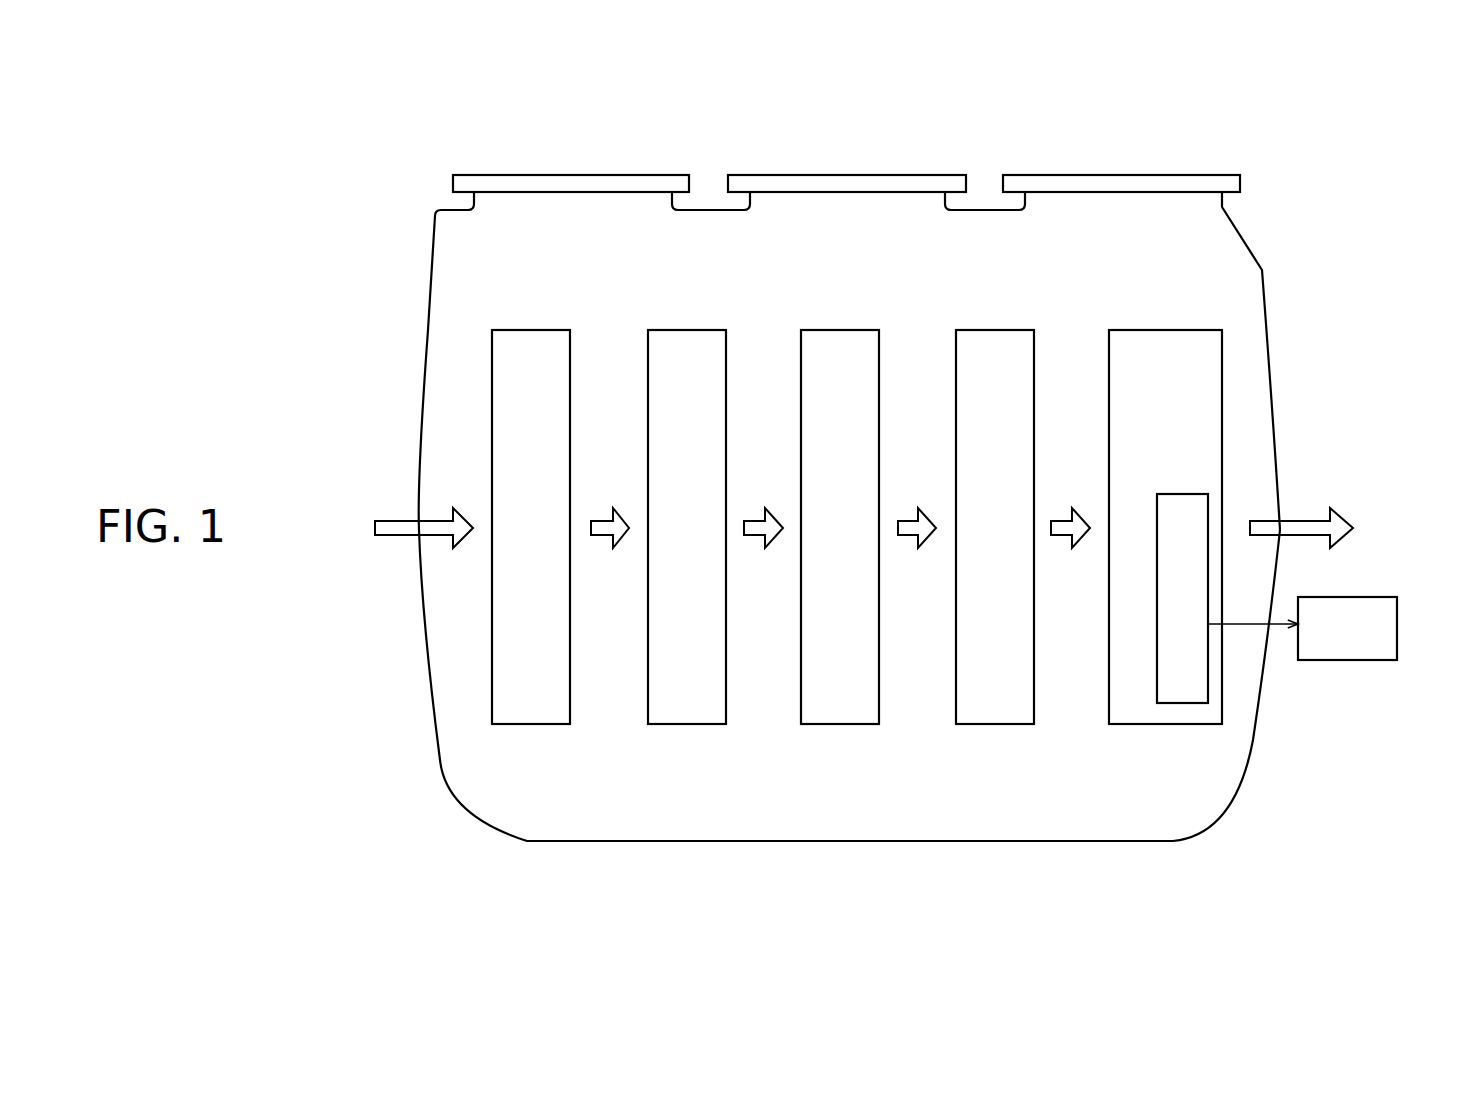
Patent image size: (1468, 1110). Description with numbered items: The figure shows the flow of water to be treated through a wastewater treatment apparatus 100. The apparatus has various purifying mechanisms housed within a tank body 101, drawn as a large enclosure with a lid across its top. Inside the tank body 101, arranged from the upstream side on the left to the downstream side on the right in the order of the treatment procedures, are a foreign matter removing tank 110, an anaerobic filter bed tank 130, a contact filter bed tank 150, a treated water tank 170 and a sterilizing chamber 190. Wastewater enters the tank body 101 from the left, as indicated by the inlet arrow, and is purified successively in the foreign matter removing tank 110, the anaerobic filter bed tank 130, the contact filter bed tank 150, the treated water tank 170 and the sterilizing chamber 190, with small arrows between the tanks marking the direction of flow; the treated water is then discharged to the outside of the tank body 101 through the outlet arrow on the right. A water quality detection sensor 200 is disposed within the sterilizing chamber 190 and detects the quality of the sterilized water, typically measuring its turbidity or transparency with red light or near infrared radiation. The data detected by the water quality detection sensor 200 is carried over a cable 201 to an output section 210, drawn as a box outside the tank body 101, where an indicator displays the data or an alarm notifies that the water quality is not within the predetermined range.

The wastewater treatment apparatus 100 is at (1135, 99).
The tank body 101 is at (1243, 260).
The foreign matter removing tank 110 is at (533, 330).
The anaerobic filter bed tank 130 is at (683, 329).
The contact filter bed tank 150 is at (838, 329).
The treated water tank 170 is at (992, 328).
The sterilizing chamber 190 is at (1138, 328).
The water quality detection sensor 200 is at (1210, 512).
The cable 201 is at (1237, 625).
The output section 210 is at (1365, 662).